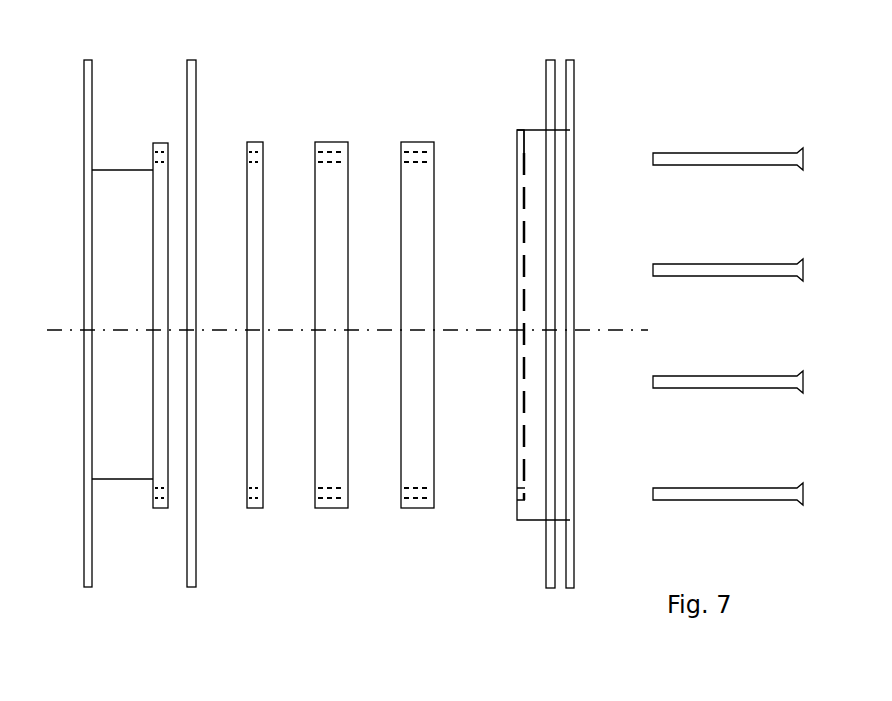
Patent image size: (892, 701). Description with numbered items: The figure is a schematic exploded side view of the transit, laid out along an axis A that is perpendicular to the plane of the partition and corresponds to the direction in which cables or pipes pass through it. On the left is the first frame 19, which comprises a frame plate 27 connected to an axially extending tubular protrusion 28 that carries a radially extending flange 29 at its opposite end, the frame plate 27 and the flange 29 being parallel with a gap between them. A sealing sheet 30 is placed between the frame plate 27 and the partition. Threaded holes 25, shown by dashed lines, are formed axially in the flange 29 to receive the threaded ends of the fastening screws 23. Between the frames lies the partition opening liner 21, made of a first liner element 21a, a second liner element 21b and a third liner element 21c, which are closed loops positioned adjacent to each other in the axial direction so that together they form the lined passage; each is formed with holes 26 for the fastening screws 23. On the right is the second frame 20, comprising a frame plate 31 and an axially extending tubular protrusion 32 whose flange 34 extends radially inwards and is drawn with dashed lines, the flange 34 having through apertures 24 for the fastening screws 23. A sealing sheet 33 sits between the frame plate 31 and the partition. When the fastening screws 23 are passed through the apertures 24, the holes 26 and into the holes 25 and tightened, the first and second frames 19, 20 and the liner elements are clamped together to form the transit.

The first frame 19 is at (118, 60).
The second frame 20 is at (572, 46).
The partition opening liner 21 is at (330, 52).
The first liner element 21a is at (255, 142).
The second liner element 21b is at (419, 142).
The third liner element 21c is at (329, 142).
The fastening screws 23 is at (722, 157).
The through apertures 24 is at (517, 155).
The threaded holes 25 is at (157, 143).
The holes 26 is at (256, 505).
The frame plate 27 is at (89, 587).
The tubular protrusion 28 is at (119, 479).
The flange 29 is at (159, 508).
The sealing sheet 30 is at (192, 587).
The frame plate 31 is at (575, 578).
The tubular protrusion 32 is at (538, 442).
The sealing sheet 33 is at (551, 588).
The flange 34 is at (525, 205).
The axis A is at (347, 315).